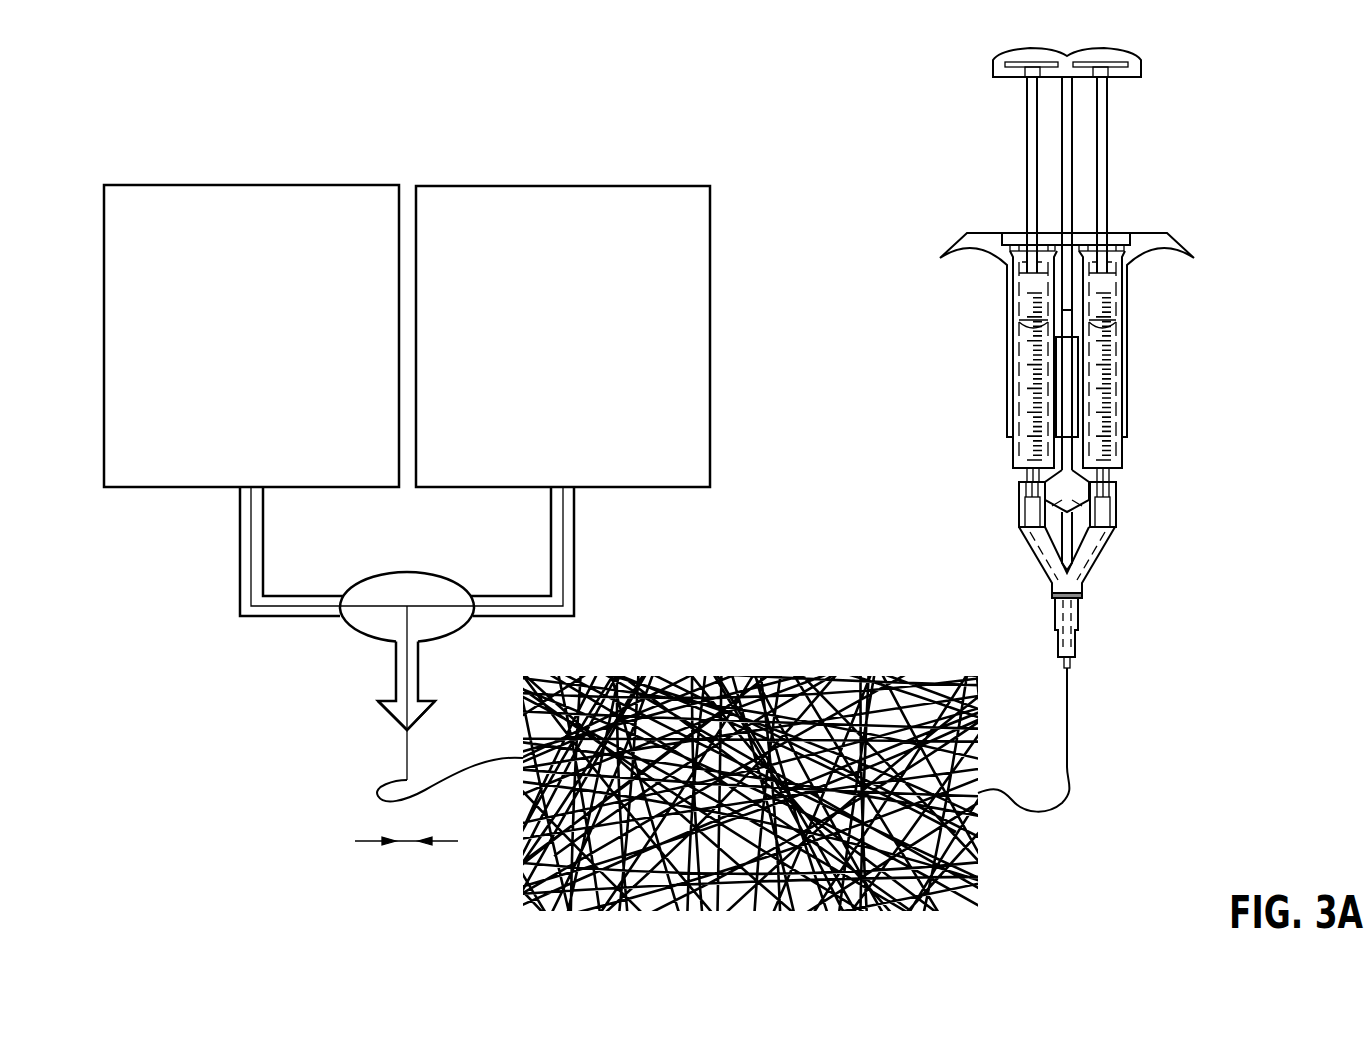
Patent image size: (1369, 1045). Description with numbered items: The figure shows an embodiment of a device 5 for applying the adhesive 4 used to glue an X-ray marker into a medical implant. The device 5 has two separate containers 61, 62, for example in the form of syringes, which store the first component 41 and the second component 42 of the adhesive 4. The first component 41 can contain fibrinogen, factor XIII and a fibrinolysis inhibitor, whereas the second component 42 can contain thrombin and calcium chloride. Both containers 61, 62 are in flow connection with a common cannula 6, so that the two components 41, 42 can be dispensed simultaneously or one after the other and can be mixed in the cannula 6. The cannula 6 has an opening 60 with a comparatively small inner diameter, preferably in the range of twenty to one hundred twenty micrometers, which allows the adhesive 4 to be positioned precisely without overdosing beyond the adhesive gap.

The device 5 is at (348, 132).
The container 61 is at (250, 185).
The container 62 is at (562, 185).
The first component 41 is at (265, 447).
The second component 42 is at (575, 447).
The cannula 6 is at (396, 672).
The opening 60 is at (390, 744).
The adhesive 4 is at (407, 751).